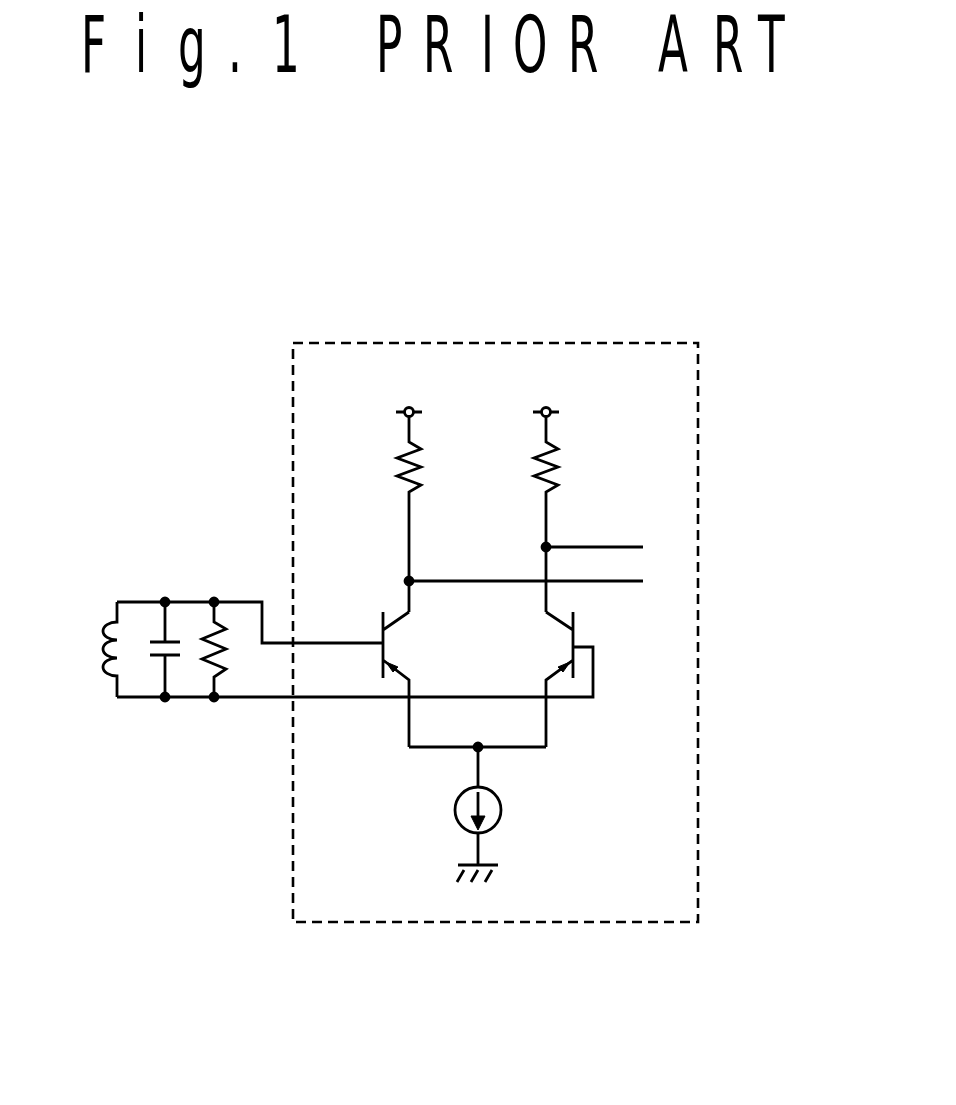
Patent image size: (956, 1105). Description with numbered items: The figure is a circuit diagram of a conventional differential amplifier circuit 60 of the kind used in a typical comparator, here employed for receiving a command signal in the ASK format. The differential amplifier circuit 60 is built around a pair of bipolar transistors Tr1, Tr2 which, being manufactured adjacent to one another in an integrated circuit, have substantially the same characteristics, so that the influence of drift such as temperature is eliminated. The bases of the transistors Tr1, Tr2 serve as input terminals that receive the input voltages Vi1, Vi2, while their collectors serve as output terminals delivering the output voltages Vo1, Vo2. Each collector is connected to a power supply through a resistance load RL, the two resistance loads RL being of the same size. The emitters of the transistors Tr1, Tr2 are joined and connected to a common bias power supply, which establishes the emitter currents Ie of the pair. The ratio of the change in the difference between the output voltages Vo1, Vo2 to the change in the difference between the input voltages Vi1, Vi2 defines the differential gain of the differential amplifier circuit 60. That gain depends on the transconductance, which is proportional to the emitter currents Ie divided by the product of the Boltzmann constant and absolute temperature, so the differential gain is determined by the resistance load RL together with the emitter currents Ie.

The differential amplifier circuit 60 is at (473, 342).
The resistance load RL is at (476, 510).
The output voltage Vo1 is at (600, 545).
The output voltage Vo2 is at (498, 578).
The bipolar transistor Tr1 is at (400, 643).
The bipolar transistor Tr2 is at (585, 640).
The emitter current Ie is at (477, 812).
The input voltage Vi1 is at (357, 642).
The input voltage Vi2 is at (375, 700).